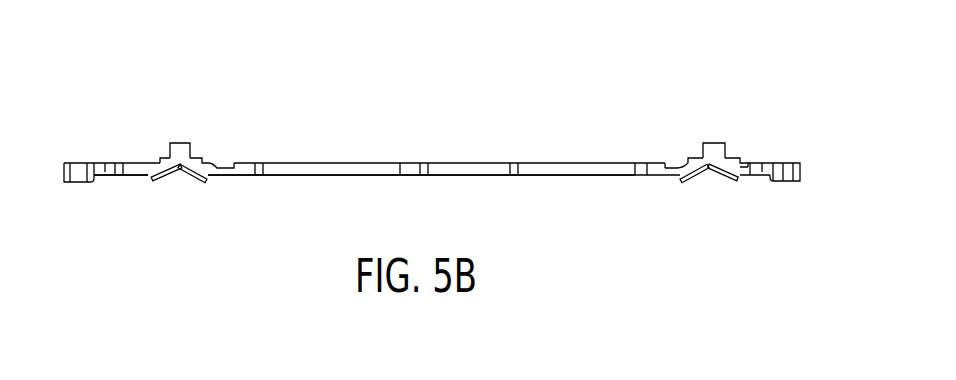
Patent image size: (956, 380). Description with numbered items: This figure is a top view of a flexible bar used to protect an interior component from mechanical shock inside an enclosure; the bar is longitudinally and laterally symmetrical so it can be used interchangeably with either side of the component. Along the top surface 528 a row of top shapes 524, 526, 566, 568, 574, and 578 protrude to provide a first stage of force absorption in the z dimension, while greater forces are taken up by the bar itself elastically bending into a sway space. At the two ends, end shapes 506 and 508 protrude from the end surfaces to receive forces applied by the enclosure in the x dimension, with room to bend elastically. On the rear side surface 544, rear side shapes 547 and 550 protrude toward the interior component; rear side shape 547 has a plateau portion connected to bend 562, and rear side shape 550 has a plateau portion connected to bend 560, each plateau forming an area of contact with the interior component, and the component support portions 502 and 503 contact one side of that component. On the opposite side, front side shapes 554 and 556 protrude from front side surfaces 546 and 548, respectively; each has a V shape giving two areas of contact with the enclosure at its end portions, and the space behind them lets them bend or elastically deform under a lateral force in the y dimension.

The end shape 508 is at (64, 181).
The top shape 574 is at (105, 165).
The rear side shape 547 is at (168, 143).
The component support portion 503 is at (179, 143).
The bend 562 is at (214, 162).
The top shape 566 is at (263, 163).
The rear side surface 544 is at (357, 163).
The top shape 524 is at (422, 163).
The top shape 526 is at (515, 163).
The top surface 528 is at (575, 176).
The top shape 568 is at (640, 166).
The bend 560 is at (682, 167).
The rear side shape 550 is at (699, 158).
The component support portion 502 is at (716, 143).
The top shape 578 is at (758, 166).
The end shape 506 is at (801, 168).
The front side shape 556 is at (199, 181).
The front side surface 548 is at (206, 181).
The front side surface 546 is at (680, 181).
The front side shape 554 is at (700, 178).